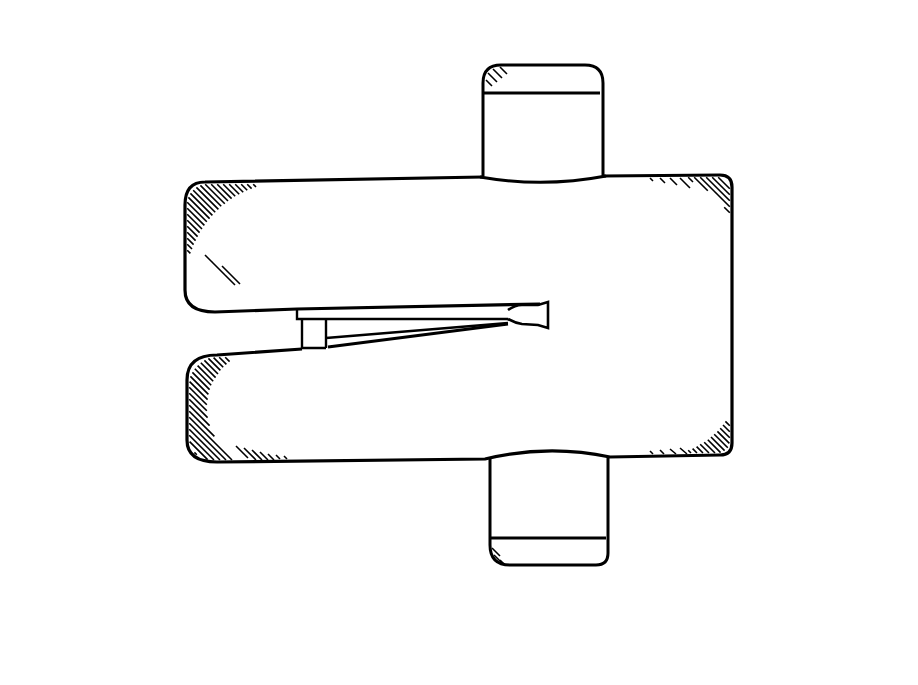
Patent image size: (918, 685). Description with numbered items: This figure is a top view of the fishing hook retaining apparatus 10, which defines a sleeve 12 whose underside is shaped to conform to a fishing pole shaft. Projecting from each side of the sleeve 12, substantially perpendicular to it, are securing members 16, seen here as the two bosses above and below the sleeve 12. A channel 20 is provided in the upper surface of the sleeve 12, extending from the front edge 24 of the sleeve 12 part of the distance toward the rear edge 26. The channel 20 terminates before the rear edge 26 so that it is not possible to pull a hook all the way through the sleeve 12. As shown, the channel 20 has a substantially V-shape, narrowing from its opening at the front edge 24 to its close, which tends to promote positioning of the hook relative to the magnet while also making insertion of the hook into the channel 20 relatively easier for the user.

The fishing hook retaining apparatus 10 is at (346, 92).
The sleeve 12 is at (384, 198).
The securing members 16 is at (583, 125).
The channel 20 is at (237, 343).
The front edge 24 is at (182, 255).
The rear edge 26 is at (732, 283).